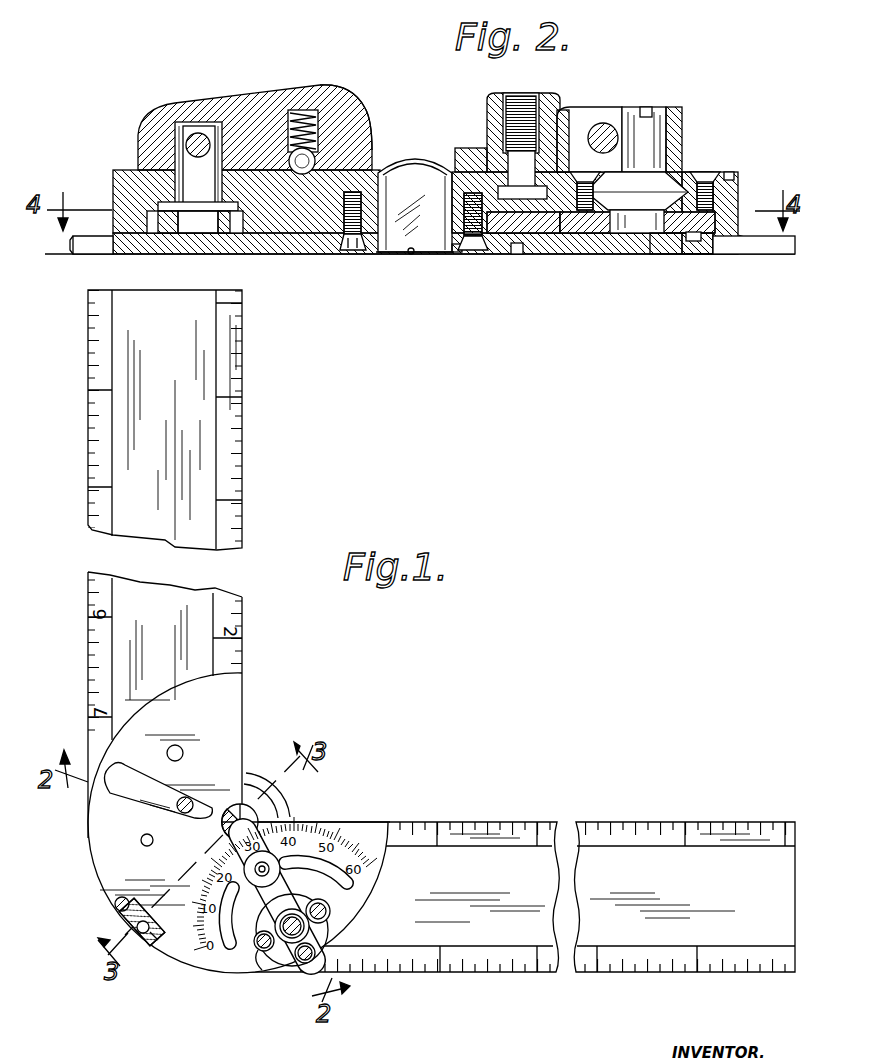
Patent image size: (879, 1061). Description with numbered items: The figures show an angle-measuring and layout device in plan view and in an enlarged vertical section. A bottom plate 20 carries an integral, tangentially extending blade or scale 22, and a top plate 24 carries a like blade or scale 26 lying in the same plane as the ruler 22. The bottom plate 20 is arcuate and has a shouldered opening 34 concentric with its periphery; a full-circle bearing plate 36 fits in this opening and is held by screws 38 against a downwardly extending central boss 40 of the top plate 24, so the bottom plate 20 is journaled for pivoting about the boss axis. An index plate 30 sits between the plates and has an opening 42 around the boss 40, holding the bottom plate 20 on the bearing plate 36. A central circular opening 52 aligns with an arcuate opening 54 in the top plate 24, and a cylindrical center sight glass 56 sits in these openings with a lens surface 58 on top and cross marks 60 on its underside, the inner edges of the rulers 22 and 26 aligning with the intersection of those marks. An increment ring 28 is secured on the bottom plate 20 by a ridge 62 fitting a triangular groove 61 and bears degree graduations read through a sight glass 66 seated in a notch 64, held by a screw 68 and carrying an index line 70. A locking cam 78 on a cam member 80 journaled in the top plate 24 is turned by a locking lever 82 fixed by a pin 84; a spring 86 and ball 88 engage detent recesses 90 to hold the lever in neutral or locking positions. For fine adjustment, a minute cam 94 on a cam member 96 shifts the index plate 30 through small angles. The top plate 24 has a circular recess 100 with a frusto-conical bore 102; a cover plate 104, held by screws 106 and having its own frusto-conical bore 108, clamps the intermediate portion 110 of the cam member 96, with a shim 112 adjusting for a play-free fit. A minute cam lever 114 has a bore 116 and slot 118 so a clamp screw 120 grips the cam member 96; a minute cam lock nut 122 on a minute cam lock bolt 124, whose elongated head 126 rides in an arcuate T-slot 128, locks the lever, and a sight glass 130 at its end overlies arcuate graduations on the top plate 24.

In FIG. 2, the bottom plate 20 is at (264, 250).
In FIG. 2, the blade or scale 22 is at (76, 252).
In FIG. 2, the top plate 24 is at (121, 170).
In FIG. 1, the top plate 24 is at (217, 967).
In FIG. 2, the blade or scale 26 is at (749, 256).
In FIG. 1, the blade or scale 26 is at (660, 846).
In FIG. 2, the increment ring 28 is at (696, 256).
In FIG. 2, the index plate 30 is at (590, 262).
In FIG. 2, the shouldered opening 34 is at (352, 246).
In FIG. 2, the bearing plate 36 is at (522, 236).
In FIG. 1, the bearing plate 36 is at (281, 792).
In FIG. 2, the screws 38 is at (472, 252).
In FIG. 2, the boss 40 is at (386, 252).
In FIG. 2, the opening 42 is at (516, 202).
In FIG. 2, the circular opening 52 is at (456, 250).
In FIG. 2, the arcuate opening 54 is at (383, 165).
In FIG. 2, the center sight glass 56 is at (415, 182).
In FIG. 2, the lens surface 58 is at (398, 162).
In FIG. 2, the cross marks 60 is at (411, 256).
In FIG. 1, the cross marks 60 is at (258, 816).
In FIG. 2, the triangular groove 61 is at (676, 236).
In FIG. 2, the ridge 62 is at (702, 240).
In FIG. 1, the notch 64 is at (132, 922).
In FIG. 1, the sight glass 66 is at (150, 944).
In FIG. 1, the screw 68 is at (116, 900).
In FIG. 1, the index line 70 is at (140, 938).
In FIG. 2, the locking cam 78 is at (202, 230).
In FIG. 2, the cam member 80 is at (190, 123).
In FIG. 2, the locking lever 82 is at (240, 100).
In FIG. 1, the locking lever 82 is at (172, 790).
In FIG. 2, the pin 84 is at (199, 133).
In FIG. 2, the spring 86 is at (303, 112).
In FIG. 2, the ball 88 is at (340, 92).
In FIG. 2, the detent recesses 90 is at (304, 176).
In FIG. 1, the detent recesses 90 is at (184, 757).
In FIG. 2, the minute cam 94 is at (628, 232).
In FIG. 2, the cam member 96 is at (690, 138).
In FIG. 1, the cam member 96 is at (296, 942).
In FIG. 2, the circular recess 100 is at (744, 184).
In FIG. 2, the frusto-conical bore 102 is at (636, 212).
In FIG. 2, the cover plate 104 is at (716, 178).
In FIG. 1, the cover plate 104 is at (313, 960).
In FIG. 2, the screws 106 is at (708, 172).
In FIG. 1, the screws 106 is at (262, 956).
In FIG. 2, the frusto-conical bore 108 is at (702, 160).
In FIG. 2, the intermediate portion 110 is at (641, 116).
In FIG. 2, the shim 112 is at (526, 192).
In FIG. 2, the minute cam lever 114 is at (603, 124).
In FIG. 1, the minute cam lever 114 is at (248, 958).
In FIG. 2, the bore 116 is at (674, 113).
In FIG. 1, the slot 118 is at (340, 886).
In FIG. 2, the clamp screw 120 is at (640, 112).
In FIG. 1, the clamp screw 120 is at (326, 920).
In FIG. 2, the minute cam lock nut 122 is at (566, 116).
In FIG. 1, the minute cam lock nut 122 is at (282, 863).
In FIG. 2, the minute cam lock bolt 124 is at (522, 100).
In FIG. 2, the head 126 is at (516, 254).
In FIG. 2, the T-slot 128 is at (497, 150).
In FIG. 1, the T-slot 128 is at (232, 962).
In FIG. 2, the sight glass 130 is at (470, 150).
In FIG. 1, the sight glass 130 is at (302, 830).